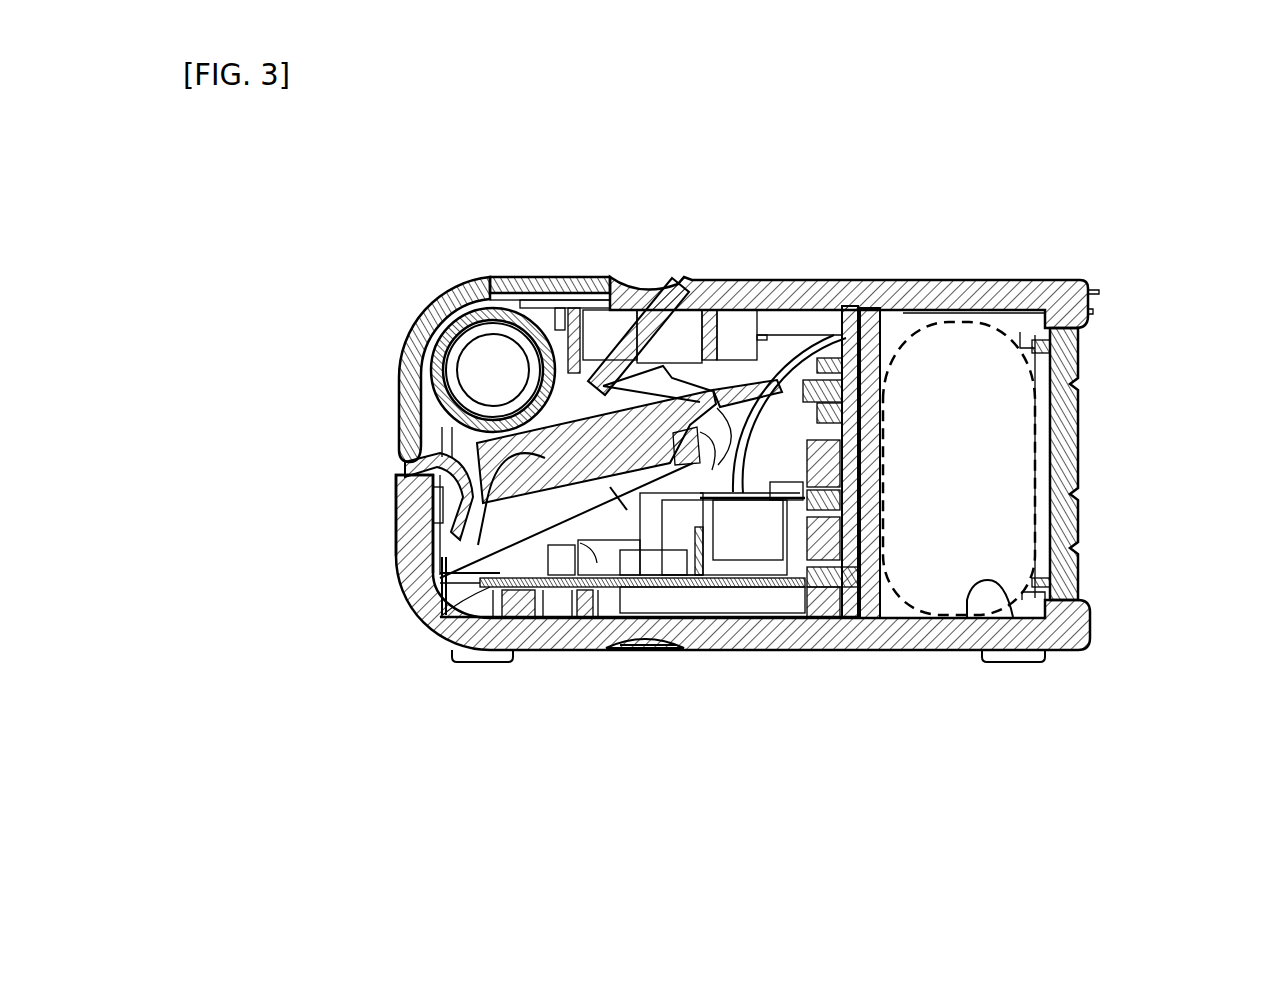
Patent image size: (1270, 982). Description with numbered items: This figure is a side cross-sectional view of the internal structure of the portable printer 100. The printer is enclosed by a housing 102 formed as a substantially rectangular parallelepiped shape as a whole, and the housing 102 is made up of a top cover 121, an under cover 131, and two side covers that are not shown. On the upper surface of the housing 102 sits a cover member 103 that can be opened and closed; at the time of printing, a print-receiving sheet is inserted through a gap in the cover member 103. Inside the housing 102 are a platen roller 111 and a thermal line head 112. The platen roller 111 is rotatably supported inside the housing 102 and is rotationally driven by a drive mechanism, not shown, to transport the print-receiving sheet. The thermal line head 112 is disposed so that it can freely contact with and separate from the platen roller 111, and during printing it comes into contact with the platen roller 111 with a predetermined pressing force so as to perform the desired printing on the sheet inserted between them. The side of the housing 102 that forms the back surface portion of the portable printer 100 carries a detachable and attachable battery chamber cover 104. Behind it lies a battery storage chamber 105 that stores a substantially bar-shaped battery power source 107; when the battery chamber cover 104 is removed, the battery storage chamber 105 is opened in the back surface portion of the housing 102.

The portable printer 100 is at (985, 182).
The housing 102 is at (393, 478).
The cover member 103 is at (542, 277).
The battery chamber cover 104 is at (1080, 350).
The battery storage chamber 105 is at (968, 600).
The battery power source 107 is at (1000, 330).
The platen roller 111 is at (443, 337).
The thermal line head 112 is at (647, 650).
The top cover 121 is at (790, 276).
The under cover 131 is at (747, 652).